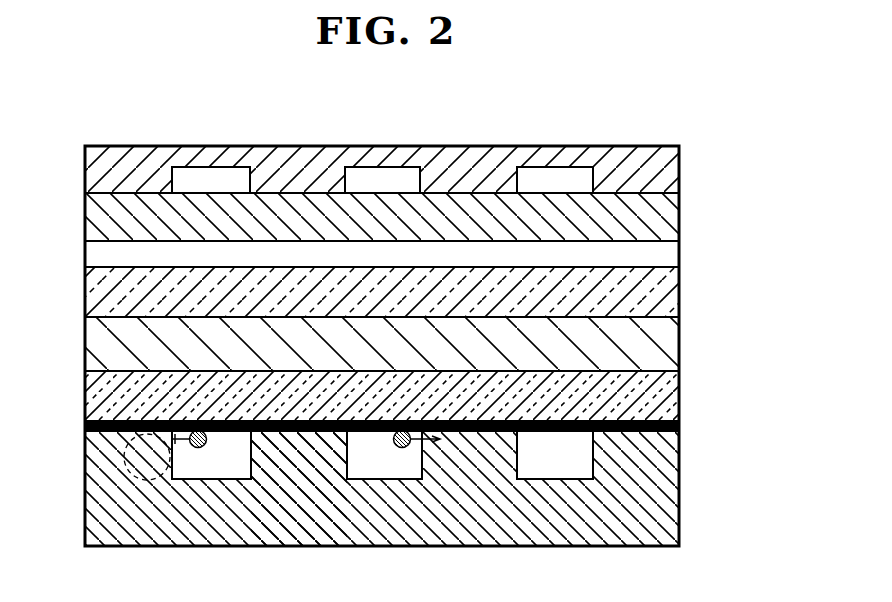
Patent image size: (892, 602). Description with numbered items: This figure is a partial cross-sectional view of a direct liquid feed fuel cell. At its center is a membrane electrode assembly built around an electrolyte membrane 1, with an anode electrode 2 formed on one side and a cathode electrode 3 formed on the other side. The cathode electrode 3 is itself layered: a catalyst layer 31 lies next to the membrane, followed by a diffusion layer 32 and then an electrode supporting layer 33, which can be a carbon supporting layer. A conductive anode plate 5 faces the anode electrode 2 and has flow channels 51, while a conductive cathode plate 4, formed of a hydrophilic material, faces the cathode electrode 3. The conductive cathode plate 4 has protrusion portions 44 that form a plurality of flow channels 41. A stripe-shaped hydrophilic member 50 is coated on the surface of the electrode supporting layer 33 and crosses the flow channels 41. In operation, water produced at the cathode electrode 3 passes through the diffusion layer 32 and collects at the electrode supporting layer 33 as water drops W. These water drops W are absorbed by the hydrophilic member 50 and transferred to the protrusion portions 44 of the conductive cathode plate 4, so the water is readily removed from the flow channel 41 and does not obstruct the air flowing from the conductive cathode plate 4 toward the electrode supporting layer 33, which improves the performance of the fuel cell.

The electrolyte membrane 1 is at (681, 251).
The anode electrode 2 is at (681, 213).
The cathode electrode 3 is at (441, 344).
The catalyst layer 31 is at (681, 292).
The diffusion layer 32 is at (681, 342).
The electrode supporting layer 33 is at (421, 396).
The conductive cathode plate 4 is at (415, 515).
The flow channel 41 is at (217, 465).
The protrusion portion 44 is at (295, 457).
The conductive anode plate 5 is at (415, 147).
The stripe-shaped hydrophilic member 50 is at (551, 432).
The flow channel 51 is at (553, 181).
The water drop W is at (193, 448).